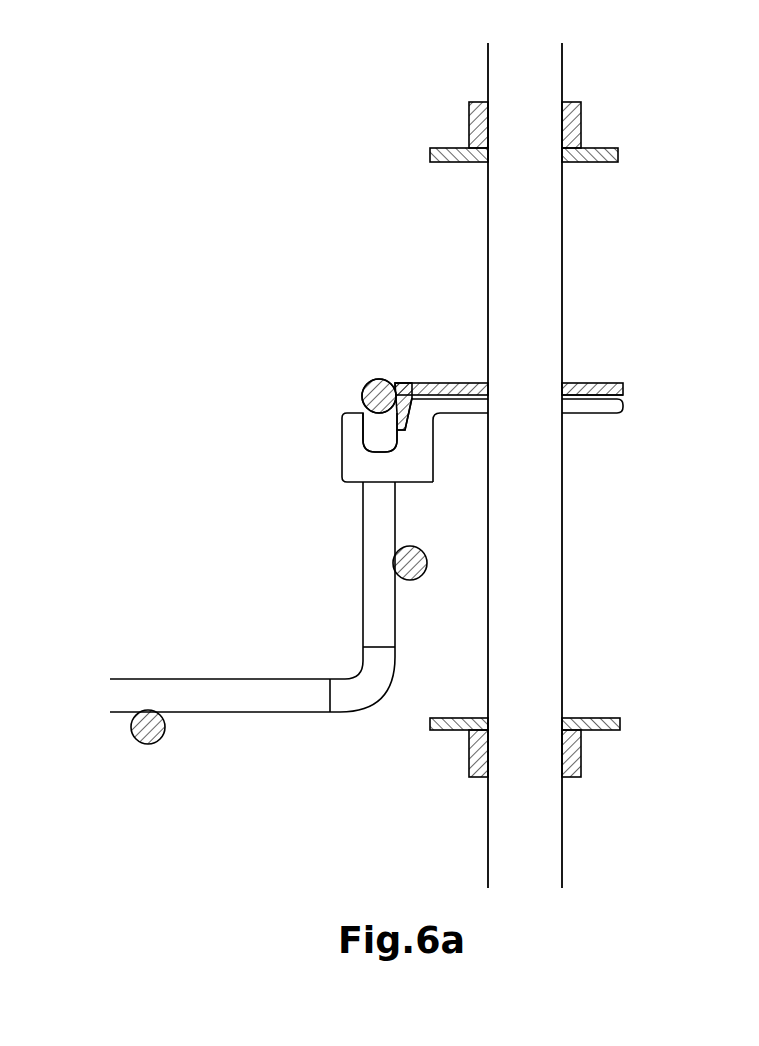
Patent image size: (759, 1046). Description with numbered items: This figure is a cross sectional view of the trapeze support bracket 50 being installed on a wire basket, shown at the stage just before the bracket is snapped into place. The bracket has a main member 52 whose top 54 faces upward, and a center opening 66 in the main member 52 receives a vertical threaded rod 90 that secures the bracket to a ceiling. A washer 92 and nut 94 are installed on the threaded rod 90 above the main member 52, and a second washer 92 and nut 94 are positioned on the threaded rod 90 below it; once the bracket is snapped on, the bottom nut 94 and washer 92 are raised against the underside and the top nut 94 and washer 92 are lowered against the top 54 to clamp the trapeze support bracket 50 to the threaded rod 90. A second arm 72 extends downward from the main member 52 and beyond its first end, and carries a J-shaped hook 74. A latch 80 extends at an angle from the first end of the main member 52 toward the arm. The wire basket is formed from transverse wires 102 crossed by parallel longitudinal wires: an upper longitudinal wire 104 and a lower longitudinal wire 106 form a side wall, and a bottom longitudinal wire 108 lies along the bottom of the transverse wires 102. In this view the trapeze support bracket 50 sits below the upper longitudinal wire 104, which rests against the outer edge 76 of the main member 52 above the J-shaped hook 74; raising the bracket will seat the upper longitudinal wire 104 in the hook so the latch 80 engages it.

The trapeze support bracket 50 is at (617, 380).
The main member 52 is at (602, 383).
The top 54 is at (457, 380).
The opening 66 is at (562, 383).
The second arm 72 is at (355, 470).
The J-shaped hook 74 is at (360, 440).
The outer edge 76 is at (392, 383).
The latch 80 is at (405, 383).
The threaded rod 90 is at (543, 68).
The washer 92 is at (618, 151).
The nut 94 is at (580, 117).
The transverse wire 102 is at (178, 698).
The upper longitudinal wire 104 is at (362, 392).
The lower longitudinal wire 106 is at (417, 580).
The bottom longitudinal wire 108 is at (155, 742).